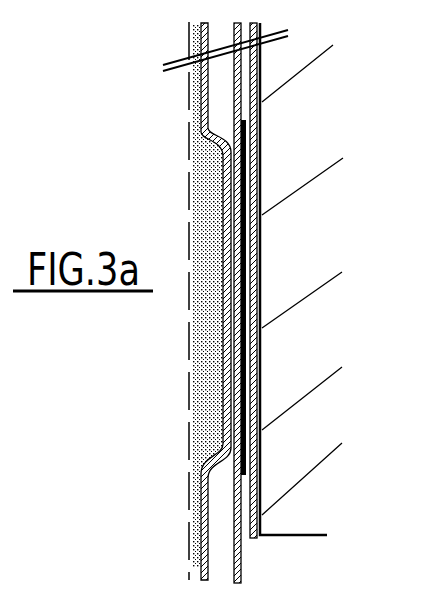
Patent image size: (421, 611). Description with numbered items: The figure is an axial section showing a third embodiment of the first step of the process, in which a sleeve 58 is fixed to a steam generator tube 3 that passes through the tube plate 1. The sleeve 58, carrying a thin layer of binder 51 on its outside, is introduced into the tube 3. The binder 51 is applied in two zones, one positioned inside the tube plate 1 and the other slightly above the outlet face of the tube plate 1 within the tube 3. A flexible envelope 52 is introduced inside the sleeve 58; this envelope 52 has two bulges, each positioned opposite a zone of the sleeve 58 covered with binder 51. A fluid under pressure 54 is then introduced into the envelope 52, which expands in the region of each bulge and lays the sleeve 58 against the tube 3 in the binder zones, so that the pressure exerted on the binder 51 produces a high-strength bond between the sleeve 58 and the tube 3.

The tube plate 1 is at (317, 523).
The steam generator tube 3 is at (257, 460).
The layer of binder 51 is at (248, 143).
The flexible envelope 52 is at (227, 280).
The fluid under pressure 54 is at (210, 377).
The sleeve 58 is at (237, 557).